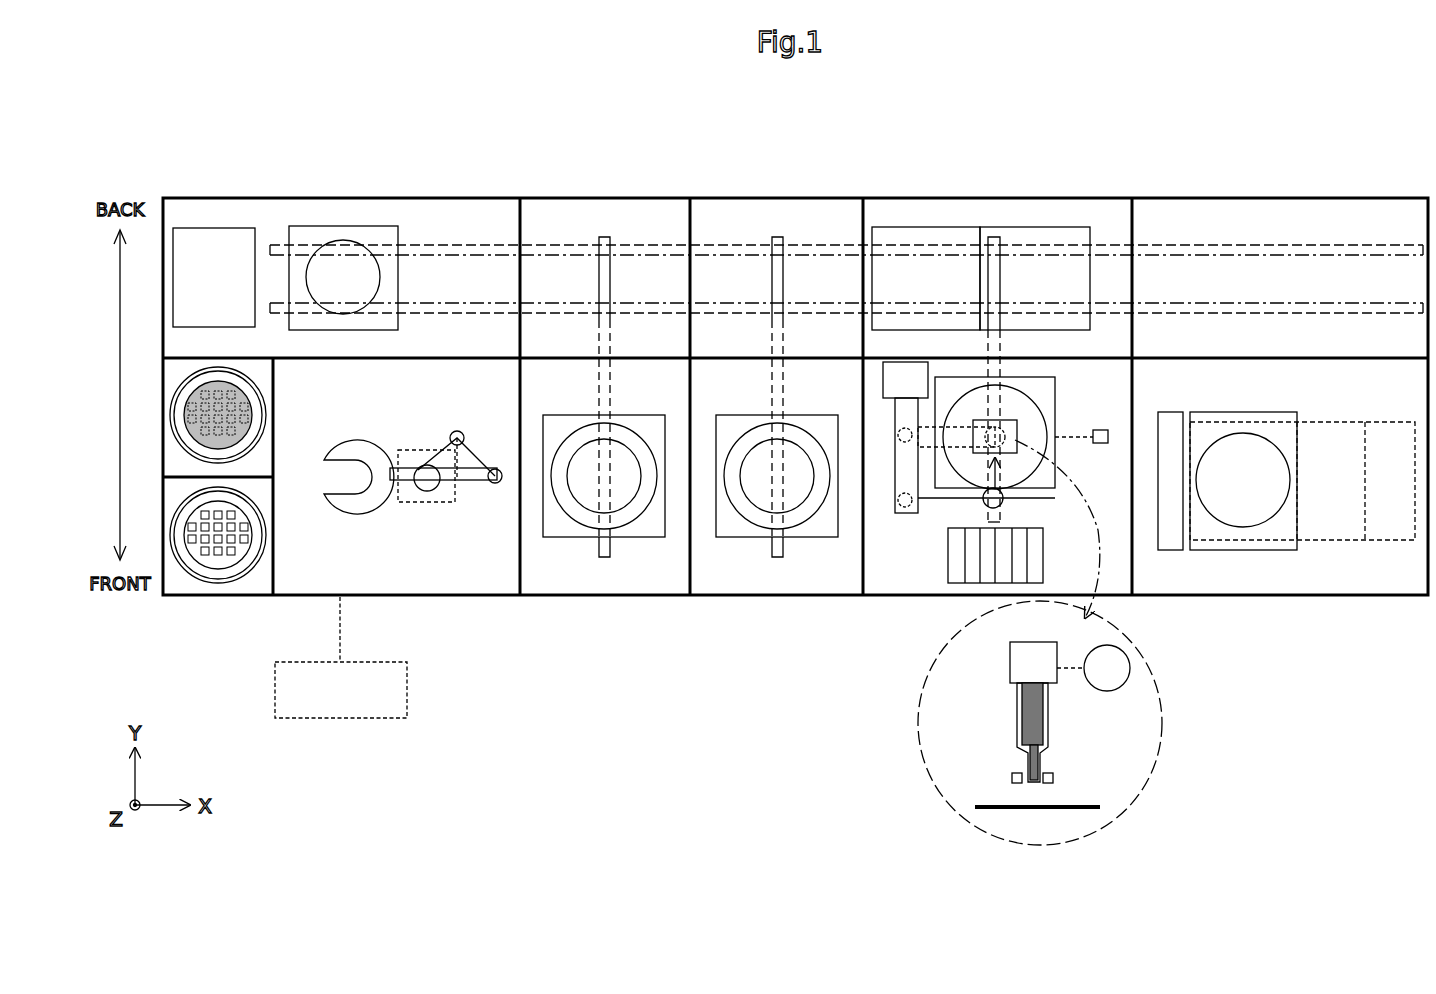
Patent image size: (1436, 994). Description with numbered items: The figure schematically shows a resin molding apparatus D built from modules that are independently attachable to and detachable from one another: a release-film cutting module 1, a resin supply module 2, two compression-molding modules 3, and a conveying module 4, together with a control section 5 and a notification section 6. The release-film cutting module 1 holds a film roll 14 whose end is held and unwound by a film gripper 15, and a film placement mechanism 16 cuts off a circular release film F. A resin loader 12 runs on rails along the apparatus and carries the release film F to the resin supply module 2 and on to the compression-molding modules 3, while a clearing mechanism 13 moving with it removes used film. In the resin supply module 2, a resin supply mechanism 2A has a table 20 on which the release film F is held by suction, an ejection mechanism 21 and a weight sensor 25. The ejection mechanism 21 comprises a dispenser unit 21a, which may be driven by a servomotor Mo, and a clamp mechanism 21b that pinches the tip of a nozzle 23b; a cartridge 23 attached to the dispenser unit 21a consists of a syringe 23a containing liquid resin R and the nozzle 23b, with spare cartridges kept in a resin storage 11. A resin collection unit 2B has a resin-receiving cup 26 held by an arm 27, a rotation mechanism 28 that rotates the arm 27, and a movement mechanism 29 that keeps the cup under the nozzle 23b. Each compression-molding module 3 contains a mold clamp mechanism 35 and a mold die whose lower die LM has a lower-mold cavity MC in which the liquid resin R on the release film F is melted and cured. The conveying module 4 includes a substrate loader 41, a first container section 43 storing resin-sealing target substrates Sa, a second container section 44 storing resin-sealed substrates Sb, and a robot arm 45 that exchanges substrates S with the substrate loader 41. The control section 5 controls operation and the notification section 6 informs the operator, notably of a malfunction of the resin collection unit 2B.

The release-film cutting module 1 is at (1266, 190).
The resin supply module 2 is at (990, 190).
The resin supply mechanism 2A is at (1102, 388).
The resin collection unit 2B is at (905, 520).
The compression-molding module 3 is at (606, 190).
The conveying module 4 is at (368, 190).
The control section 5 is at (212, 228).
The notification section 6 is at (407, 690).
The resin storage 11 is at (942, 578).
The resin loader 12 is at (922, 228).
The clearing mechanism 13 is at (1035, 228).
The film roll 14 is at (1380, 428).
The film gripper 15 is at (1170, 545).
The film placement mechanism 16 is at (1250, 418).
The table 20 is at (1046, 406).
The ejection mechanism 21 is at (1010, 420).
The dispenser unit 21a is at (1018, 660).
The clamp mechanism 21b is at (1022, 788).
The cartridge 23 is at (996, 585).
The syringe 23a is at (1026, 715).
The nozzle 23b is at (1030, 760).
The weight sensor 25 is at (1103, 445).
The resin-receiving cup 26 is at (1003, 500).
The arm 27 is at (940, 505).
The rotation mechanism 28 is at (898, 505).
The movement mechanism 29 is at (895, 465).
The mold clamp mechanism 35 is at (633, 545).
The substrate loader 41 is at (388, 290).
The first container section 43 is at (248, 500).
The second container section 44 is at (262, 382).
The robot arm 45 is at (388, 432).
The resin molding apparatus D is at (262, 122).
The substrate S is at (343, 240).
The resin-sealing target substrate Sa is at (240, 555).
The resin-sealed substrate Sb is at (245, 440).
The lower die LM is at (632, 435).
The lower-mold cavity MC is at (574, 490).
The release film F is at (1020, 466).
The liquid resin R is at (1044, 728).
The servomotor Mo is at (1093, 668).